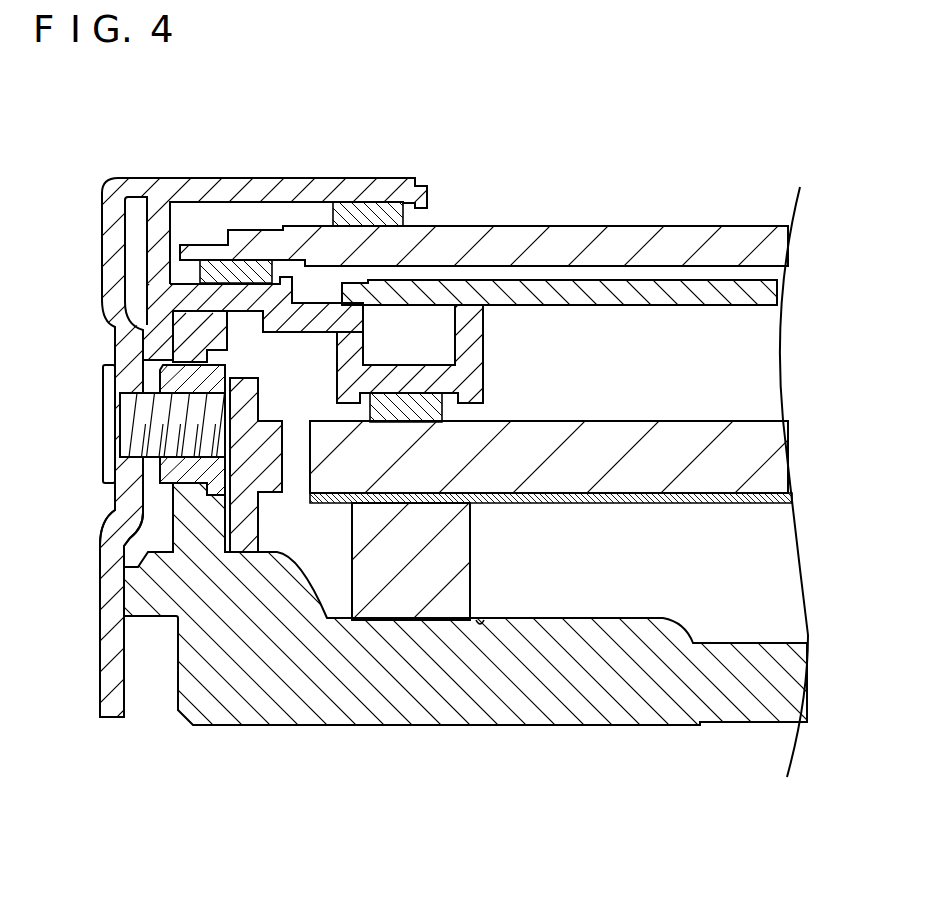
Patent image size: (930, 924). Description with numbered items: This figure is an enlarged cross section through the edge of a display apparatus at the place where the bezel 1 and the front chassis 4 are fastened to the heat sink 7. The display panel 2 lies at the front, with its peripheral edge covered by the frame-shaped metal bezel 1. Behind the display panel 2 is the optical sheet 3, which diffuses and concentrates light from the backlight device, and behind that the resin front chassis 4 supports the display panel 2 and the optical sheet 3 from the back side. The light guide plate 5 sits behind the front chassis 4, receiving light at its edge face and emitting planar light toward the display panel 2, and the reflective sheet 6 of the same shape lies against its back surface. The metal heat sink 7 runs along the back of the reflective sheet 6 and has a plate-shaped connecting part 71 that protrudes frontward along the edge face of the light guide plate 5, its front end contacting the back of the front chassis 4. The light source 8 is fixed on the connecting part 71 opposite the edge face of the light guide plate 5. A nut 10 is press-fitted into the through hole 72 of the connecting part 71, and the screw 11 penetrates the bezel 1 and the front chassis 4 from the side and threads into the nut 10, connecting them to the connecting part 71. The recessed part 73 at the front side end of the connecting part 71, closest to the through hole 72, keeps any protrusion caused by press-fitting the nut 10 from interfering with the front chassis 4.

The bezel 1 is at (279, 185).
The display panel 2 is at (583, 228).
The optical sheet 3 is at (652, 305).
The front chassis 4 is at (487, 352).
The light guide plate 5 is at (612, 423).
The reflective sheet 6 is at (545, 503).
The heat sink 7 is at (481, 705).
The light source 8 is at (253, 532).
The nut 10 is at (222, 369).
The screw 11 is at (108, 397).
The connecting part 71 is at (108, 533).
The through hole 72 is at (150, 500).
The recessed part 73 is at (195, 320).